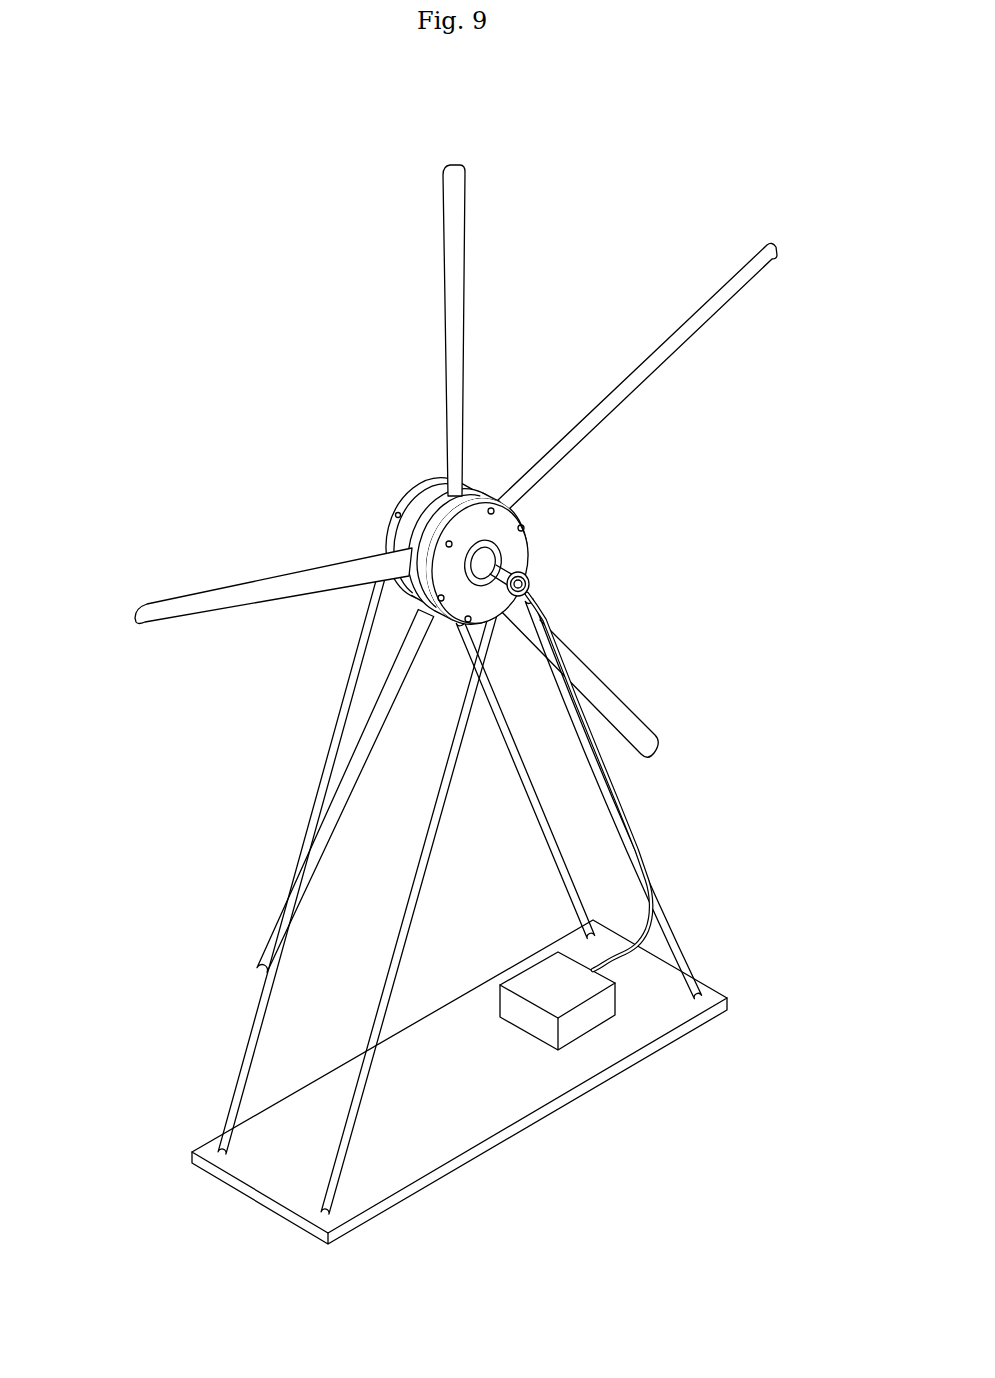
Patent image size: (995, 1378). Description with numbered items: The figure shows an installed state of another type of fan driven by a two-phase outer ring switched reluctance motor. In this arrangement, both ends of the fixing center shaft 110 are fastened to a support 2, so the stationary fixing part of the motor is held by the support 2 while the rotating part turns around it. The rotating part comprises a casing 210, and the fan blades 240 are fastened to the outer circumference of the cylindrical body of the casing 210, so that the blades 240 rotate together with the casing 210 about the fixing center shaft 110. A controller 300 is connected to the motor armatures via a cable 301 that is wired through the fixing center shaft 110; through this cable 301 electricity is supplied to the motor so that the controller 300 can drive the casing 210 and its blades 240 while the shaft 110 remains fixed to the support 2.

The support 2 is at (257, 1005).
The fixing center shaft 110 is at (495, 565).
The casing 210 is at (450, 515).
The fan blades 240 is at (593, 430).
The controller 300 is at (582, 1020).
The cable 301 is at (662, 967).